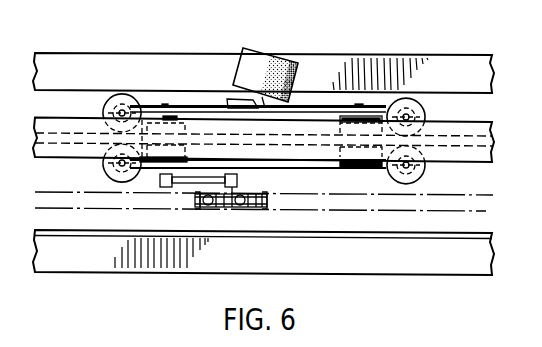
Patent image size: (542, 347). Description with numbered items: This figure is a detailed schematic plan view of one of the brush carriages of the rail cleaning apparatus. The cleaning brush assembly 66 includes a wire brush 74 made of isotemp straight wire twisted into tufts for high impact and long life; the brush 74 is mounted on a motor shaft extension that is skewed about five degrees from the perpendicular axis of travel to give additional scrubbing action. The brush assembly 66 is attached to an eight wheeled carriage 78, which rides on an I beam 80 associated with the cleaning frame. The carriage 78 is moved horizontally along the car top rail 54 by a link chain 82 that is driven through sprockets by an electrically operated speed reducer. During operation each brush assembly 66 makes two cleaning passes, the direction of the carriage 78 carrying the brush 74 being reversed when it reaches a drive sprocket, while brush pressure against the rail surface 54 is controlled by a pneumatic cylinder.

The car top rail 54 is at (376, 56).
The cleaning brush assembly 66 is at (213, 103).
The wire brush 74 is at (262, 59).
The eight wheeled carriage 78 is at (420, 104).
The I beam 80 is at (477, 163).
The link chain 82 is at (234, 210).